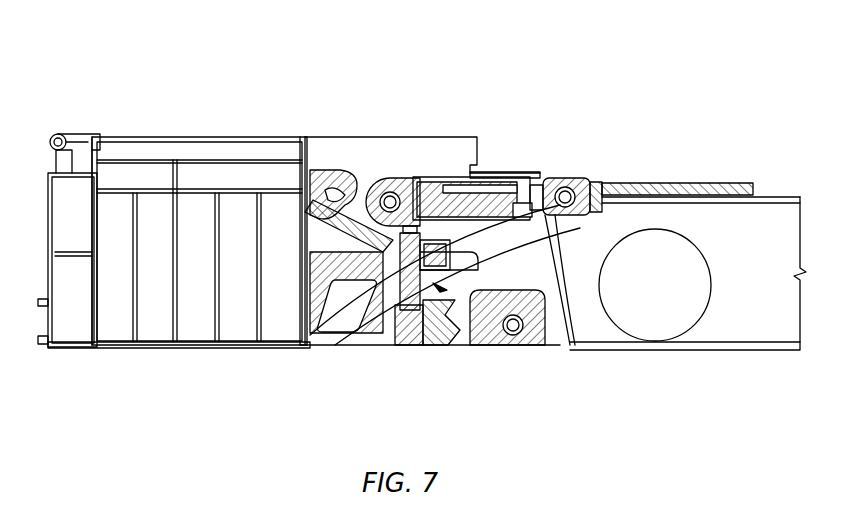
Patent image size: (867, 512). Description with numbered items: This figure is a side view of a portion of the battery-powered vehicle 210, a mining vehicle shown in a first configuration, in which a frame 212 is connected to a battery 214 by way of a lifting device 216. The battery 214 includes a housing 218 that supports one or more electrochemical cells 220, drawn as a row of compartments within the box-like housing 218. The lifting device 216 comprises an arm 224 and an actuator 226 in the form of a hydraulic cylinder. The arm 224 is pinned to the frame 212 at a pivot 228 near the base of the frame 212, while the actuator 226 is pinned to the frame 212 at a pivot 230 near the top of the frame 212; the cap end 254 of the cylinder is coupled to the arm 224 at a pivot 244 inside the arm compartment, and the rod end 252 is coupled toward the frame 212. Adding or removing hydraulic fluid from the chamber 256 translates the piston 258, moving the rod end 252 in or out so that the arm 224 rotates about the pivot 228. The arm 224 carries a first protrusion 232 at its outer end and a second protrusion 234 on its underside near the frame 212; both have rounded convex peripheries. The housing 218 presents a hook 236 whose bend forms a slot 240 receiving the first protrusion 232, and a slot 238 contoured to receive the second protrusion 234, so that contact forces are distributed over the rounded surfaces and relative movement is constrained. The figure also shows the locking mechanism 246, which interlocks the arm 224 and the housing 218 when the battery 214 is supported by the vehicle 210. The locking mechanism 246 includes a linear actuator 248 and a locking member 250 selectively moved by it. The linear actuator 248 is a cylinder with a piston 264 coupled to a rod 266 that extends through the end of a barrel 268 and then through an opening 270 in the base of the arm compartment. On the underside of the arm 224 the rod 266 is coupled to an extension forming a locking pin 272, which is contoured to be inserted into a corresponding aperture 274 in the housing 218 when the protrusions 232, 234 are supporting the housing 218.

The battery-powered vehicle 210 is at (695, 62).
The frame 212 is at (752, 348).
The battery 214 is at (120, 305).
The lifting device 216 is at (547, 147).
The housing 218 is at (318, 150).
The electrochemical cells 220 is at (238, 312).
The arm 224 is at (515, 350).
The actuator 226 is at (493, 178).
The pivot 228 is at (515, 337).
The pivot 230 is at (574, 187).
The first protrusion 232 is at (333, 177).
The second protrusion 234 is at (450, 350).
The hook 236 is at (340, 180).
The slot 238 is at (440, 347).
The slot 240 is at (318, 178).
The pivot 244 is at (307, 307).
The locking mechanism 246 is at (475, 328).
The linear actuator 248 is at (560, 248).
The locking member 250 is at (410, 292).
The rod end 252 is at (532, 178).
The cap end 254 is at (413, 177).
The chamber 256 is at (505, 178).
The piston 258 is at (427, 177).
The piston 264 is at (545, 225).
The rod 266 is at (700, 186).
The barrel 268 is at (340, 285).
The opening 270 is at (400, 288).
The locking pin 272 is at (365, 300).
The aperture 274 is at (413, 347).